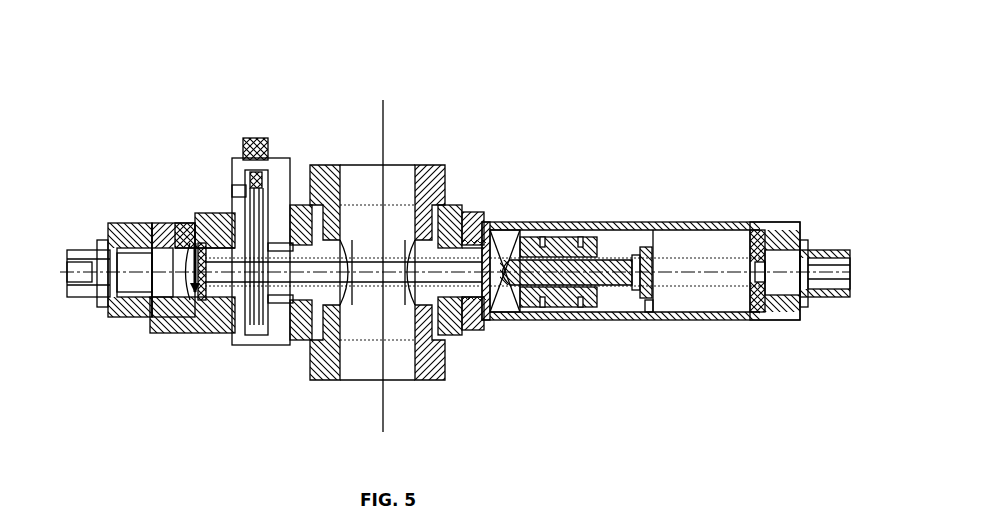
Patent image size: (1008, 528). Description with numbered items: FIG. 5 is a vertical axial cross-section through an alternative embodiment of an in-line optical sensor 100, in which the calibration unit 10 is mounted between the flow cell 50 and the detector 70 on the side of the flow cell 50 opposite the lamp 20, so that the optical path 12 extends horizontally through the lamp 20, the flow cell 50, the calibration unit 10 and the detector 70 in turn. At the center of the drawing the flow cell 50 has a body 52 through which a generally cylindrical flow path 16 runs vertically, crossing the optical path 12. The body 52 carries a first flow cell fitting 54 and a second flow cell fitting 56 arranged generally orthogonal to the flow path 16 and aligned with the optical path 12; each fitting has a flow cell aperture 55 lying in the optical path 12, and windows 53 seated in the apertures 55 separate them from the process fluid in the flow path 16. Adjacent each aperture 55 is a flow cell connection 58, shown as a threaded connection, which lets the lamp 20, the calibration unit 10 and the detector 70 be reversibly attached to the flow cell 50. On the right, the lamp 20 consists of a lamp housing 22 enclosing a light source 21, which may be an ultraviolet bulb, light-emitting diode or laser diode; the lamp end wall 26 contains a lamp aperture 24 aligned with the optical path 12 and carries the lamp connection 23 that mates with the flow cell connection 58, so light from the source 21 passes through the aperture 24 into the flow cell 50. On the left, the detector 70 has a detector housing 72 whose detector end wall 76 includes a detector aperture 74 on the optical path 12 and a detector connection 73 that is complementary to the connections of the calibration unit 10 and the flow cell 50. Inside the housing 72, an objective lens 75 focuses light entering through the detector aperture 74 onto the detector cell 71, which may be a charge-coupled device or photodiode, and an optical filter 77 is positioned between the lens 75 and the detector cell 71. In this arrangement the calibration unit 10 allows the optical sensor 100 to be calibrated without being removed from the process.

The optical sensor 100 is at (657, 91).
The calibration unit 10 is at (289, 158).
The optical path 12 is at (850, 270).
The flow path 16 is at (385, 140).
The lamp 20 is at (797, 223).
The light source 21 is at (523, 287).
The lamp housing 22 is at (643, 222).
The lamp connection 23 is at (478, 240).
The lamp aperture 24 is at (494, 249).
The lamp end wall 26 is at (484, 233).
The flow cell 50 is at (440, 165).
The body 52 is at (318, 168).
The windows 53 is at (428, 245).
The first flow cell fitting 54 is at (455, 338).
The flow cell aperture 55 is at (406, 298).
The second flow cell fitting 56 is at (303, 340).
The flow cell connection 58 is at (278, 302).
The detector unit 70 is at (120, 221).
The detector cell 71 is at (117, 288).
The detector housing 72 is at (158, 221).
The detector connection 73 is at (218, 240).
The detector aperture 74 is at (196, 300).
The objective lens 75 is at (193, 243).
The detector end wall 76 is at (233, 315).
The optical filter 77 is at (160, 282).